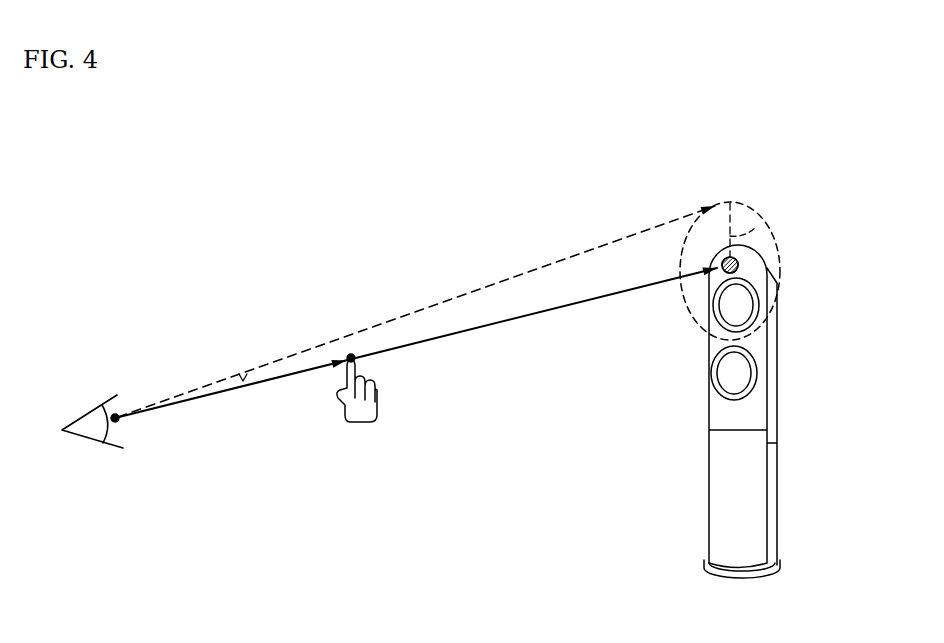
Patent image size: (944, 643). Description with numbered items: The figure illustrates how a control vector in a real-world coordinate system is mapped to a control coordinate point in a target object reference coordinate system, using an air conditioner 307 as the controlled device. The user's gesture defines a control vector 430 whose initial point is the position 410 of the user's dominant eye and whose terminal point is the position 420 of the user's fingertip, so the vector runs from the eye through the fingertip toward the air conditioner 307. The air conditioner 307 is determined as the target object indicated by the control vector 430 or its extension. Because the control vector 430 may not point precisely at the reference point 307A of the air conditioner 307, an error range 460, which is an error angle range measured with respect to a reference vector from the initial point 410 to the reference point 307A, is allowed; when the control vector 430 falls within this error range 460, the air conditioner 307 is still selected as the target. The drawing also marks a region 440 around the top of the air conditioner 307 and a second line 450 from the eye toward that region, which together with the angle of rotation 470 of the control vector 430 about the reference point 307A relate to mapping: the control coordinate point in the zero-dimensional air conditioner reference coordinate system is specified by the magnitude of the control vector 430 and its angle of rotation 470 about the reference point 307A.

The air conditioner 307 is at (723, 500).
The reference point of the air conditioner 307A is at (738, 268).
The position of an eye of the user 410 is at (117, 421).
The position of a fingertip of the user 420 is at (348, 354).
The control vector 430 is at (212, 395).
The target region 440 is at (686, 229).
The gaze direction line 450 is at (517, 275).
The error range 460 is at (243, 381).
The angle of rotation of the control vector 470 is at (739, 256).